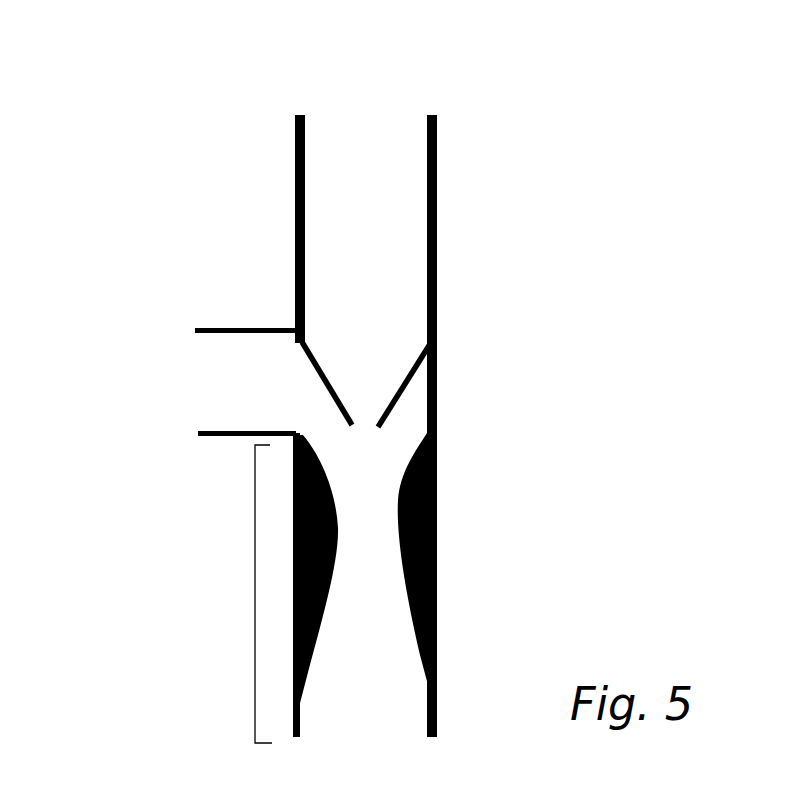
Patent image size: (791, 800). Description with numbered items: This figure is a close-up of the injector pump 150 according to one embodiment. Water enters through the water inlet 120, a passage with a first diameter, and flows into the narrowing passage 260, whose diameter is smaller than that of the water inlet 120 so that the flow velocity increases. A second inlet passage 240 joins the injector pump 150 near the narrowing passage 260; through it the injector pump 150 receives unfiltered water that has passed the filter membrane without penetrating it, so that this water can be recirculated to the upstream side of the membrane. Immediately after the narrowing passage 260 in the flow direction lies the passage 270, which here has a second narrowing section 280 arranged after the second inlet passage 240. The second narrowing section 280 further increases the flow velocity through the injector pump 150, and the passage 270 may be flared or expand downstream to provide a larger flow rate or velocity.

The injector pump 150 is at (132, 142).
The water inlet 120 is at (365, 113).
The second inlet passage 240 is at (195, 385).
The narrowing passage 260 is at (368, 425).
The second narrowing section 280 is at (437, 482).
The passage 270 is at (255, 595).